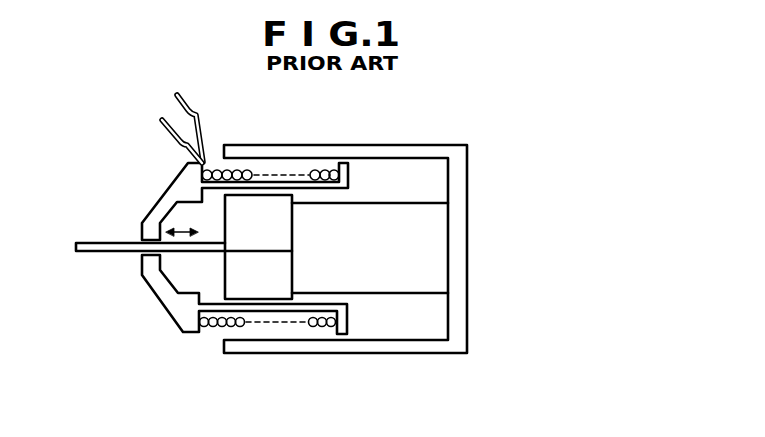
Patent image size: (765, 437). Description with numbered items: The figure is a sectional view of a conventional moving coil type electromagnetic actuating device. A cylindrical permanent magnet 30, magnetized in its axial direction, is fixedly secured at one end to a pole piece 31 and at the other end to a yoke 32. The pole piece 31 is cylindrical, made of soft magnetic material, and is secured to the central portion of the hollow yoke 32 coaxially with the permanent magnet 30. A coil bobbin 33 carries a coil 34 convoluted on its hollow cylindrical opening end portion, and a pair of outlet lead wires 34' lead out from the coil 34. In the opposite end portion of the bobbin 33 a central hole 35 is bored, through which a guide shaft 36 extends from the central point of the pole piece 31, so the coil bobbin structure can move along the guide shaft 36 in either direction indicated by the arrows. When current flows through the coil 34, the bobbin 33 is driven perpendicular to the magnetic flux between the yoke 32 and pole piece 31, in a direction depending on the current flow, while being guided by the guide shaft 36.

The cylindrical permanent magnet 30 is at (433, 277).
The pole piece 31 is at (275, 217).
The yoke 32 is at (418, 152).
The coil bobbin 33 is at (173, 192).
The coil 34 is at (270, 216).
The outlet lead wires 34' is at (191, 113).
The central hole 35 is at (150, 259).
The guide shaft 36 is at (95, 247).